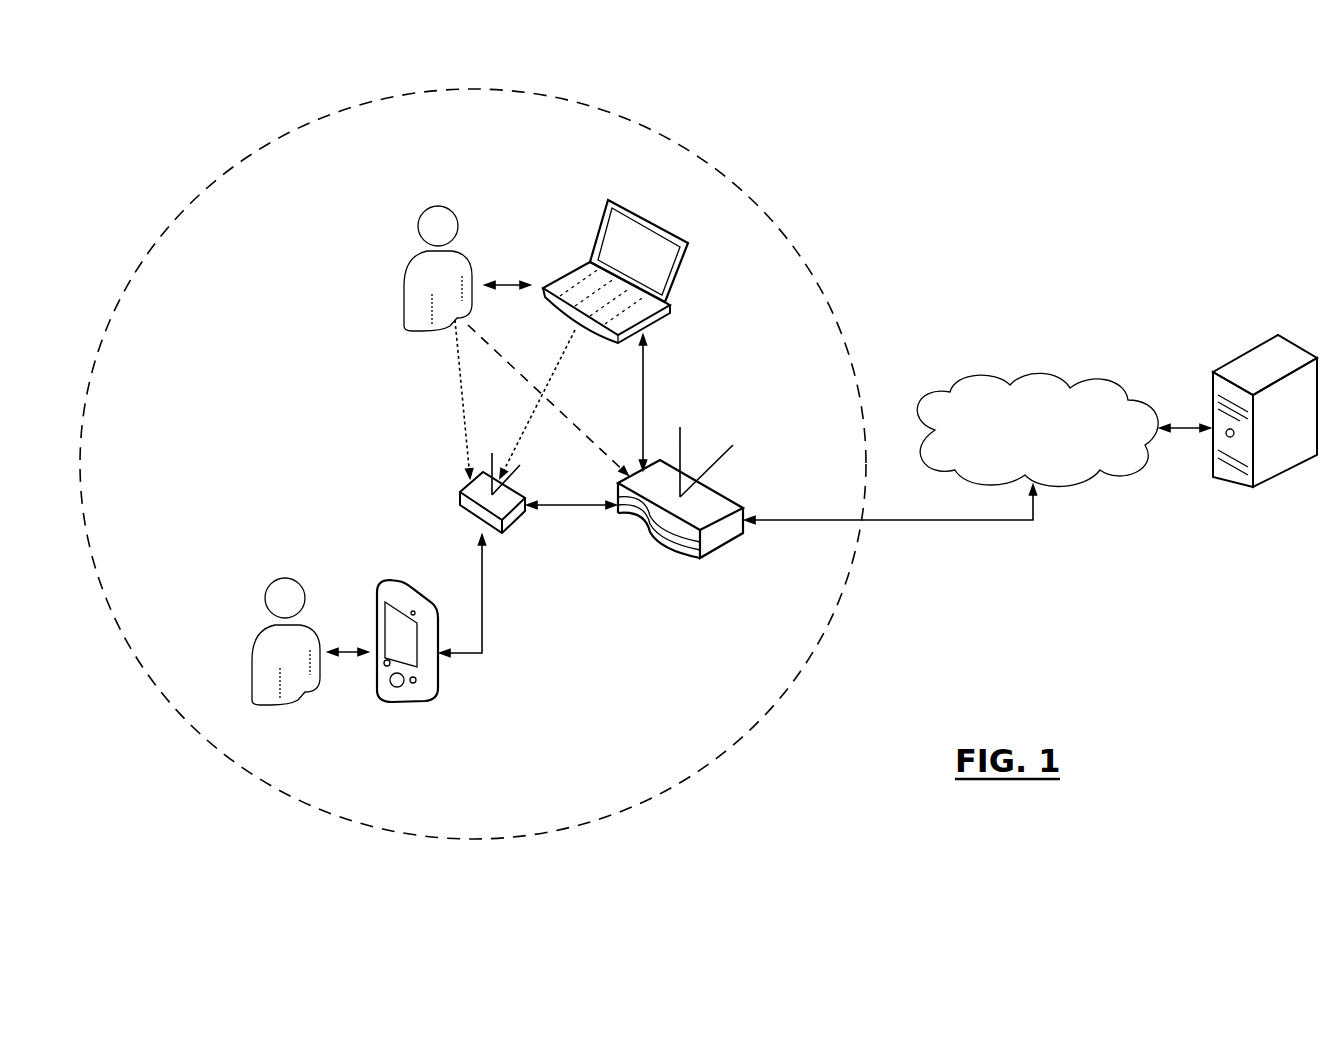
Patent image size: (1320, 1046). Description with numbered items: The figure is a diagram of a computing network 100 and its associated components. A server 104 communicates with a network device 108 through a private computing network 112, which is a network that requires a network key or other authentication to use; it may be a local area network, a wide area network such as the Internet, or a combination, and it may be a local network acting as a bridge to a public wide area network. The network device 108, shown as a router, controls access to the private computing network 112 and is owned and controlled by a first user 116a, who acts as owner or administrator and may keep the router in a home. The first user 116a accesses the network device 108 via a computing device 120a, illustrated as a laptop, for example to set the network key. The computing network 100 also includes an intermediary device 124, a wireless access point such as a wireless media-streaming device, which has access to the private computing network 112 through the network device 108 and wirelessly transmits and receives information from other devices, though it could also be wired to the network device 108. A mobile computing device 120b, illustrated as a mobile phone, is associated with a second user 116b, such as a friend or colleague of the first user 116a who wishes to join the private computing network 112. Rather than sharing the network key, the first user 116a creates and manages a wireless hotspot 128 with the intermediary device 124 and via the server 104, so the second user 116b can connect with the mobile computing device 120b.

The computing network 100 is at (1178, 700).
The server 104 is at (1243, 353).
The network device 108 is at (745, 508).
The private computing network 112 is at (1035, 381).
The first user 116a is at (440, 206).
The second user 116b is at (287, 578).
The computing device 120a is at (683, 296).
The mobile computing device 120b is at (425, 703).
The intermediary device 124 is at (460, 498).
The wireless hotspot 128 is at (758, 200).